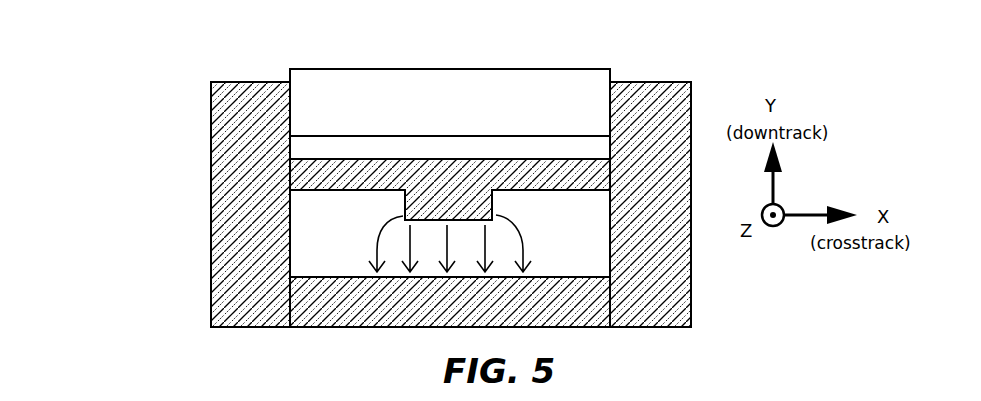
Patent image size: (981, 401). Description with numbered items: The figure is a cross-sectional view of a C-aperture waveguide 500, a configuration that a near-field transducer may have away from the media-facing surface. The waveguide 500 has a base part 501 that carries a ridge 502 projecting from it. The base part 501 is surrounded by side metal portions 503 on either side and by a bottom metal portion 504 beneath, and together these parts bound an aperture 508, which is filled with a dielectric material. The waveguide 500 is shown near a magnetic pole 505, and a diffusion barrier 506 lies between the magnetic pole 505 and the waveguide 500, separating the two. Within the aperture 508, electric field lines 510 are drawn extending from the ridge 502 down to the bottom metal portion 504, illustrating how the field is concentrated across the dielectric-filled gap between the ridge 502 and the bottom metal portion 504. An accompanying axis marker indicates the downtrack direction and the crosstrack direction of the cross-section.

The C-aperture waveguide 500 is at (148, 130).
The base part 501 is at (363, 173).
The ridge 502 is at (430, 200).
The side metal portions 503 is at (253, 110).
The bottom metal portion 504 is at (395, 312).
The magnetic pole 505 is at (515, 95).
The diffusion barrier 506 is at (468, 147).
The aperture 508 is at (350, 235).
The electric field lines 510 is at (485, 243).